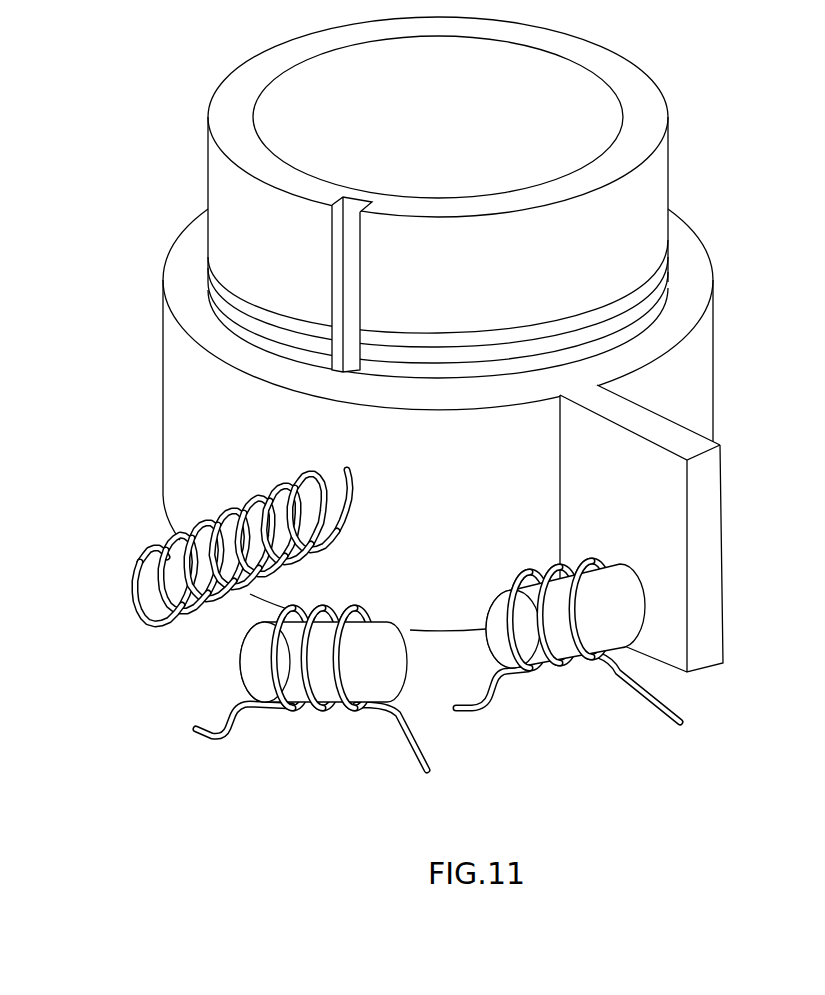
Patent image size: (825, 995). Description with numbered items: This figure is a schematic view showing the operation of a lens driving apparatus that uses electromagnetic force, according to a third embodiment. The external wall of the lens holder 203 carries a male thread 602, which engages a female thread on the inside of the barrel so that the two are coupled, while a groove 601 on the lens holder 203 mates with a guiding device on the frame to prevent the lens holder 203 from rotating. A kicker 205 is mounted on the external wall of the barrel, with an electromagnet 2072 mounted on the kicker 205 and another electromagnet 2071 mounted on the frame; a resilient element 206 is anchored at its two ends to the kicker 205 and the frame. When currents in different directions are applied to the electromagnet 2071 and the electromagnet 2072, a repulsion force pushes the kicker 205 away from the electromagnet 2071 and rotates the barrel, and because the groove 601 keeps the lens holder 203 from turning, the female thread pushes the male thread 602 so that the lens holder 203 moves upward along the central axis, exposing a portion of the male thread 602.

The lens holder 203 is at (455, 197).
The male thread 602 is at (660, 255).
The groove 601 is at (345, 257).
The kicker 205 is at (708, 608).
The resilient element 206 is at (153, 627).
The electromagnet 2071 is at (353, 683).
The electromagnet 2072 is at (548, 647).